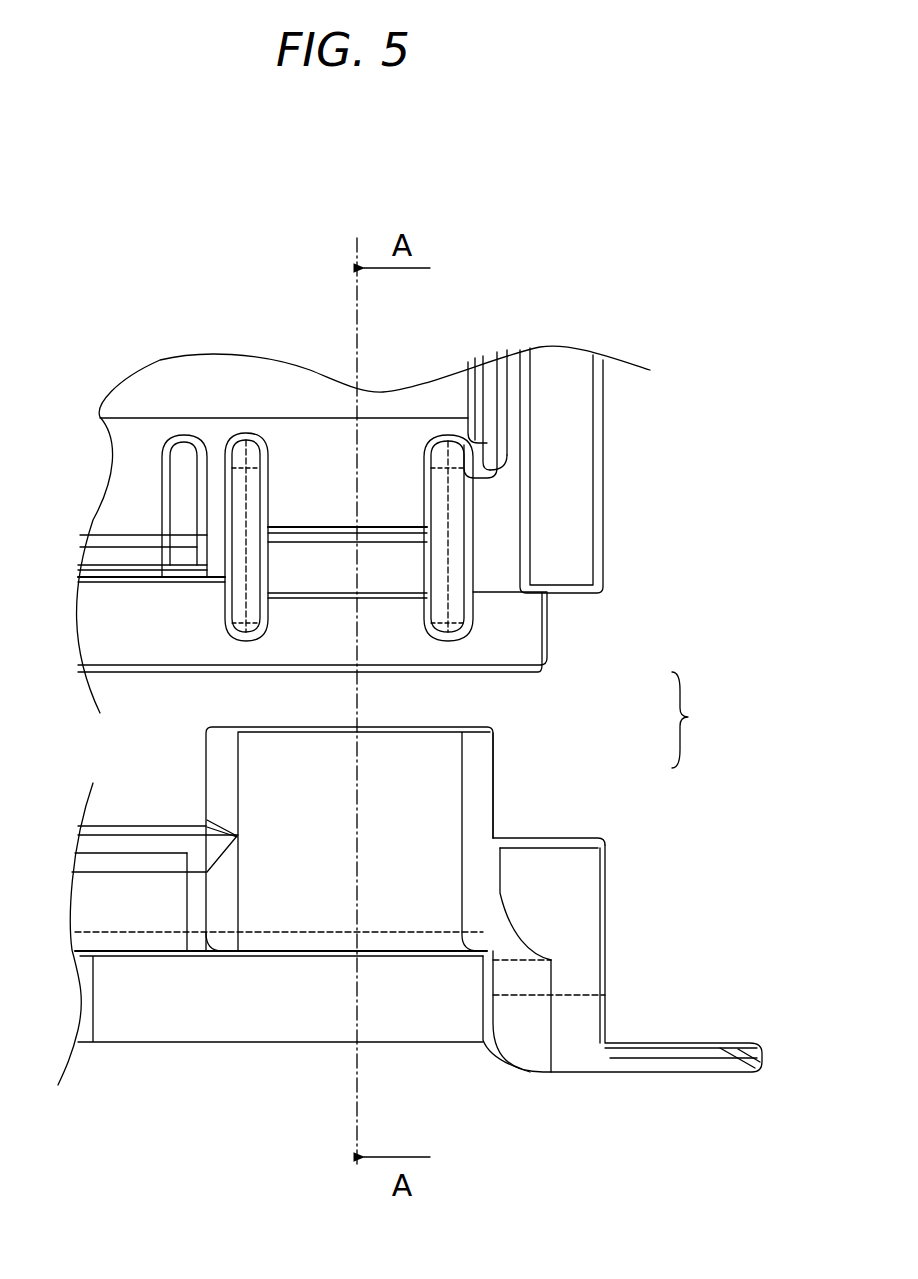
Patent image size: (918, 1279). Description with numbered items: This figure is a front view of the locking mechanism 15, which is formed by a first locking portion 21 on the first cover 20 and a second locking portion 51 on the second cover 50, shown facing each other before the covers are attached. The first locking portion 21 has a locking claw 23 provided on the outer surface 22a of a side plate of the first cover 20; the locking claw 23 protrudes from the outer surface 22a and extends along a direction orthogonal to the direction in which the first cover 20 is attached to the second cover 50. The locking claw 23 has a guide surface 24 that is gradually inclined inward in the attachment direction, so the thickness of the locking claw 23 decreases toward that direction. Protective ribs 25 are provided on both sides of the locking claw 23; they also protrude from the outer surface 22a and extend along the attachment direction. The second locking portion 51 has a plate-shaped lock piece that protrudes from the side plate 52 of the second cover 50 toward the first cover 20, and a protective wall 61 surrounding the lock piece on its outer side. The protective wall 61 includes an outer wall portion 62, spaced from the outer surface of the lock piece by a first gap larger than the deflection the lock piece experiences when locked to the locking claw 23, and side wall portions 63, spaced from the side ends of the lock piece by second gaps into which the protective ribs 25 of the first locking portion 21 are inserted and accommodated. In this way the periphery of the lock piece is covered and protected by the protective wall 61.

The locking mechanism 15 is at (696, 720).
The first cover 20 is at (612, 478).
The first locking portion 21 is at (482, 588).
The outer surface 22a is at (390, 642).
The locking claw 23 is at (315, 527).
The guide surface 24 is at (320, 578).
The protective ribs 25 is at (237, 605).
The second cover 50 is at (612, 946).
The second locking portion 51 is at (502, 805).
The side plate 52 is at (568, 838).
The protective wall 61 is at (202, 783).
The outer wall portion 62 is at (304, 900).
The side wall portions 63 is at (206, 752).